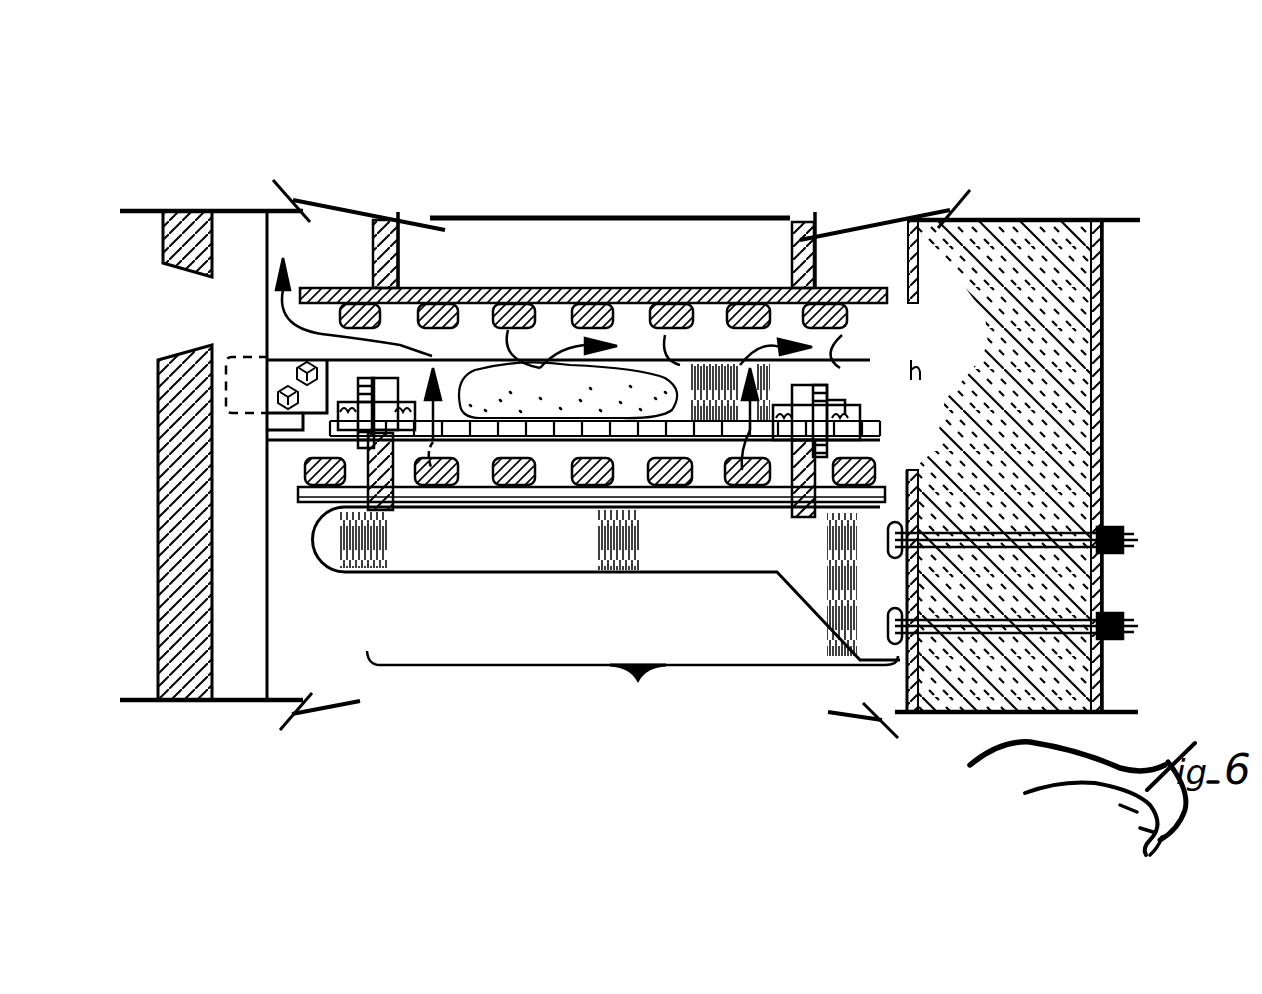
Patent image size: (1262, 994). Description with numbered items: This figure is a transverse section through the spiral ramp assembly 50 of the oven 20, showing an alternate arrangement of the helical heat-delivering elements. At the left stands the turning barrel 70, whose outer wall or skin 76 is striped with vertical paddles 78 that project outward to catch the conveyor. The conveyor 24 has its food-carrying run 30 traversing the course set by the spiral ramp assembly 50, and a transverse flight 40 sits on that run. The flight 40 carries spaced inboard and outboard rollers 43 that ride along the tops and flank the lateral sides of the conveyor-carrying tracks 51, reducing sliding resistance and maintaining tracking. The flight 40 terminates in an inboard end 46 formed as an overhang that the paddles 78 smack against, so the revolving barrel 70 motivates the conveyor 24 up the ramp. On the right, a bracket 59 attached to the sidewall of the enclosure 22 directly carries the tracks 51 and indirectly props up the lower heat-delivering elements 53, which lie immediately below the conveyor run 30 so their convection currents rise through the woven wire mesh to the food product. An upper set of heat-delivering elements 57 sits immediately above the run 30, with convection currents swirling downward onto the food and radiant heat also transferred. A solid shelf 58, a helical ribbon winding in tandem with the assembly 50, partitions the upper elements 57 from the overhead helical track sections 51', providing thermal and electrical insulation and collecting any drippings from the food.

The conveyor assembly 20 is at (350, 84).
The enclosure 22 is at (1040, 238).
The barrel 70 is at (188, 215).
The inboard end 46 is at (243, 348).
The flight 40 is at (872, 383).
The conveyor 24 is at (312, 420).
The food-carrying run 30 is at (275, 452).
The conveyor-carrying tracks 51 is at (802, 473).
The overhead helical track sections 51' is at (611, 257).
The heat-delivering elements 53 is at (432, 470).
The heat-delivering elements 57 is at (478, 272).
The solid shelf 58 is at (637, 285).
The bracket 59 is at (507, 562).
The rollers 43 is at (833, 402).
The spiral ramp assembly 50 is at (632, 694).
The outer wall or skin 76 is at (232, 660).
The paddles 78 is at (280, 590).